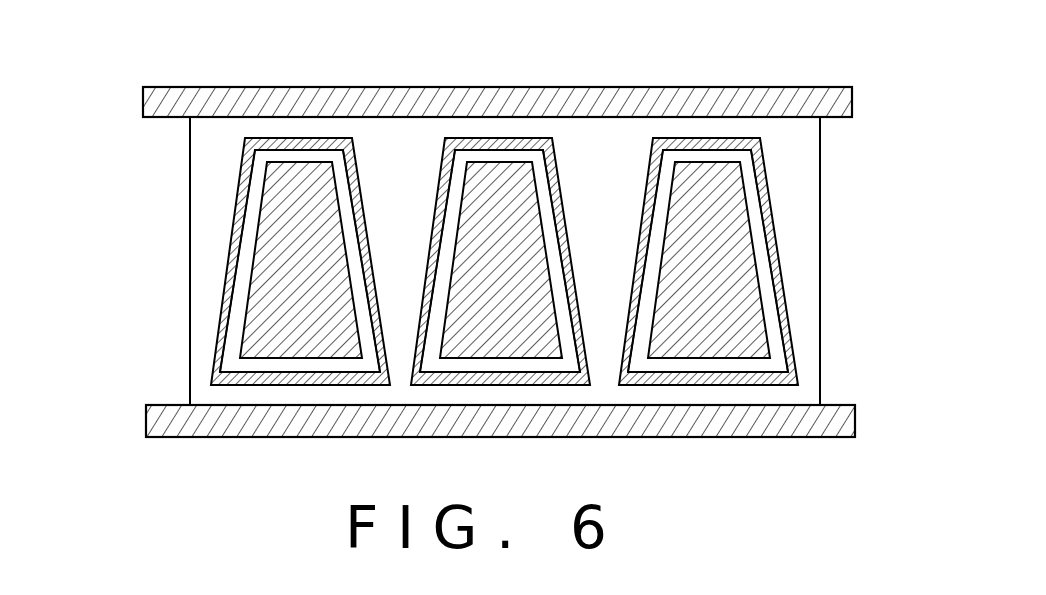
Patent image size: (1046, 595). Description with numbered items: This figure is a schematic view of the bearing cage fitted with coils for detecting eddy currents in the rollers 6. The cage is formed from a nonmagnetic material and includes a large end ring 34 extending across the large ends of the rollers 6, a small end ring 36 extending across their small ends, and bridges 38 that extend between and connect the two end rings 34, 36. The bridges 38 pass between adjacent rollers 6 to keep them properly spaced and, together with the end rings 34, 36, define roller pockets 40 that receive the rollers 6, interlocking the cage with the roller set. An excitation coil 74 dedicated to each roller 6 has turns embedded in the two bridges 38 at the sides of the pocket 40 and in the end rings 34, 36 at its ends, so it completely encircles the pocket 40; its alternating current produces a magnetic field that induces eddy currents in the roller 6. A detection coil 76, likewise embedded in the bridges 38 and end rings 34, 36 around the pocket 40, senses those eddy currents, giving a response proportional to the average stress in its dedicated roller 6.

The tapered roller 6 is at (287, 258).
The large end ring 34 is at (760, 437).
The small end ring 36 is at (722, 87).
The bridge 38 is at (403, 175).
The roller pocket 40 is at (764, 240).
The excitation coil 74 is at (503, 261).
The detection coil 76 is at (222, 328).